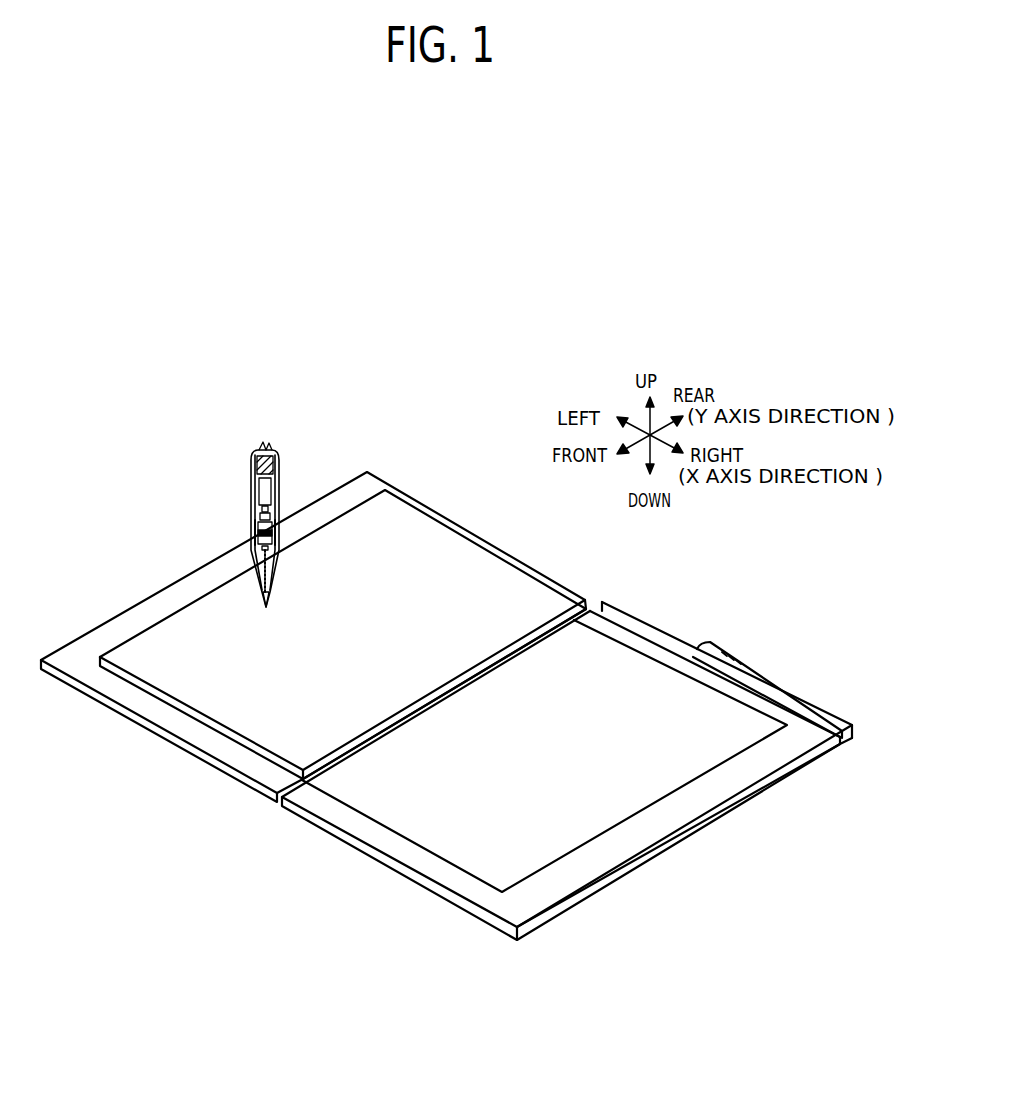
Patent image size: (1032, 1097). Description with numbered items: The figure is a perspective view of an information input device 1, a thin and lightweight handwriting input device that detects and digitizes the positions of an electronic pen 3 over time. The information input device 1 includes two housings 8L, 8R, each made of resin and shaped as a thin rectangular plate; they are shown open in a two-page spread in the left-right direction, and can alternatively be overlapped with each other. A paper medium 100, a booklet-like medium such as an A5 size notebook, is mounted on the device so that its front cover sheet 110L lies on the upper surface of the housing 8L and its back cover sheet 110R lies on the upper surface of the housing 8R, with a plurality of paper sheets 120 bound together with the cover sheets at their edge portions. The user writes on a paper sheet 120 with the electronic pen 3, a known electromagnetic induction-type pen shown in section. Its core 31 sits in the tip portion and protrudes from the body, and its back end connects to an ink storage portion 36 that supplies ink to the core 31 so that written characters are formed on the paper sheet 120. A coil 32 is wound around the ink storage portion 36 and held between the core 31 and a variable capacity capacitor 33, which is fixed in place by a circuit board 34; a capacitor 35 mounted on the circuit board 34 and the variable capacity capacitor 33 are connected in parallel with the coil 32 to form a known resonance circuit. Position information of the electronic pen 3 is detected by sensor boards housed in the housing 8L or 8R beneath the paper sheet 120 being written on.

The information input device 1 is at (782, 670).
The electronic pen 3 is at (262, 444).
The core 31 is at (270, 591).
The coil 32 is at (268, 568).
The variable capacity capacitor 33 is at (257, 532).
The circuit board 34 is at (265, 492).
The capacitor 35 is at (280, 514).
The ink storage portion 36 is at (248, 567).
The paper medium 100 is at (455, 590).
The front cover sheet 110L is at (160, 699).
The back cover sheet 110R is at (412, 843).
The paper sheet 120 is at (192, 643).
The housing 8L is at (210, 763).
The housing 8R is at (368, 854).